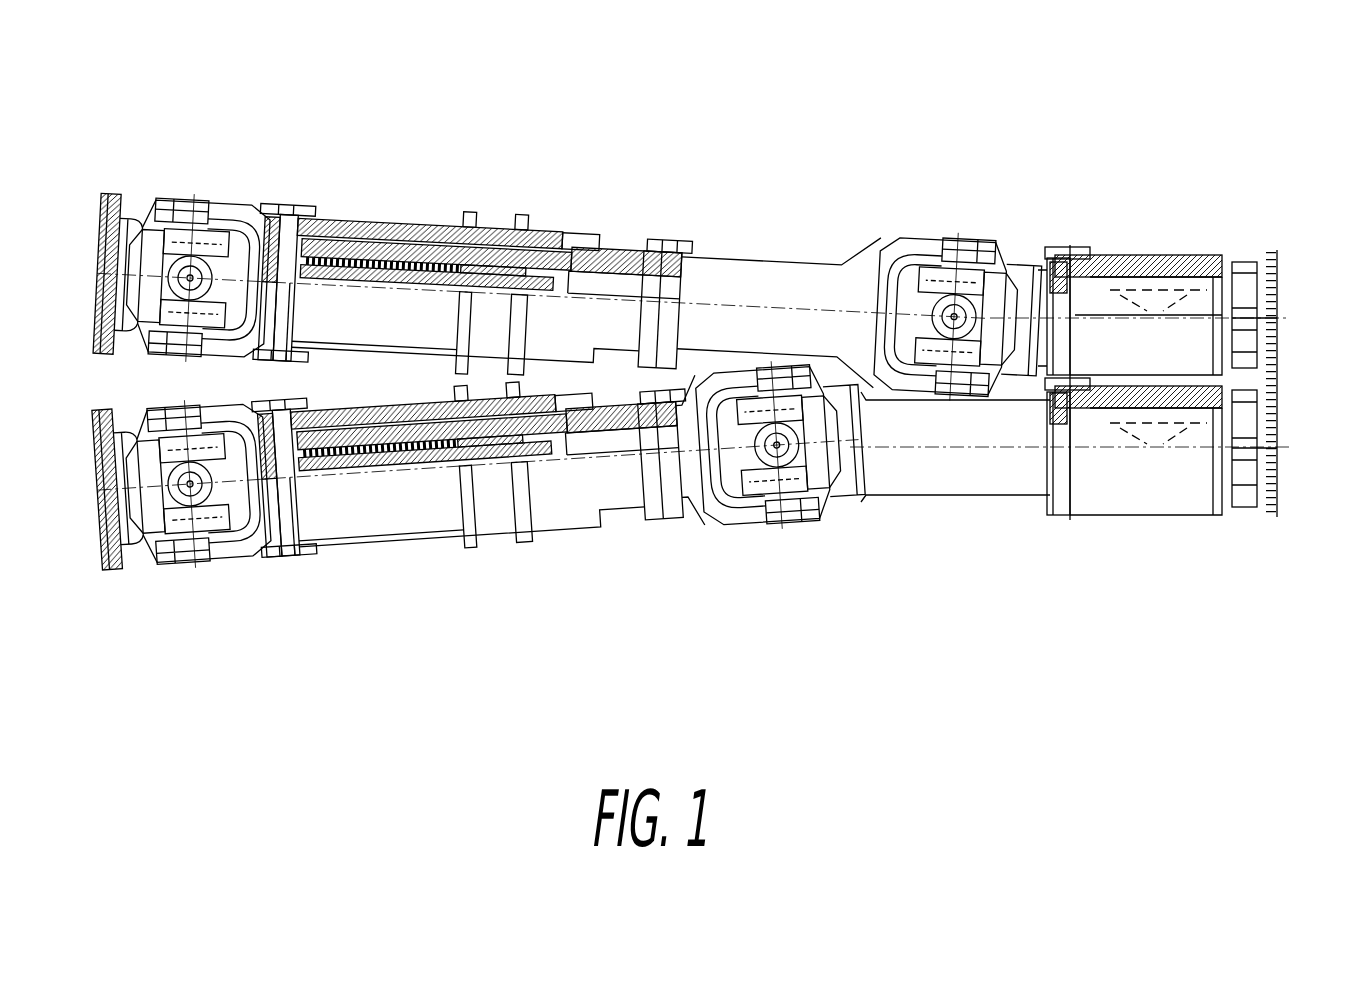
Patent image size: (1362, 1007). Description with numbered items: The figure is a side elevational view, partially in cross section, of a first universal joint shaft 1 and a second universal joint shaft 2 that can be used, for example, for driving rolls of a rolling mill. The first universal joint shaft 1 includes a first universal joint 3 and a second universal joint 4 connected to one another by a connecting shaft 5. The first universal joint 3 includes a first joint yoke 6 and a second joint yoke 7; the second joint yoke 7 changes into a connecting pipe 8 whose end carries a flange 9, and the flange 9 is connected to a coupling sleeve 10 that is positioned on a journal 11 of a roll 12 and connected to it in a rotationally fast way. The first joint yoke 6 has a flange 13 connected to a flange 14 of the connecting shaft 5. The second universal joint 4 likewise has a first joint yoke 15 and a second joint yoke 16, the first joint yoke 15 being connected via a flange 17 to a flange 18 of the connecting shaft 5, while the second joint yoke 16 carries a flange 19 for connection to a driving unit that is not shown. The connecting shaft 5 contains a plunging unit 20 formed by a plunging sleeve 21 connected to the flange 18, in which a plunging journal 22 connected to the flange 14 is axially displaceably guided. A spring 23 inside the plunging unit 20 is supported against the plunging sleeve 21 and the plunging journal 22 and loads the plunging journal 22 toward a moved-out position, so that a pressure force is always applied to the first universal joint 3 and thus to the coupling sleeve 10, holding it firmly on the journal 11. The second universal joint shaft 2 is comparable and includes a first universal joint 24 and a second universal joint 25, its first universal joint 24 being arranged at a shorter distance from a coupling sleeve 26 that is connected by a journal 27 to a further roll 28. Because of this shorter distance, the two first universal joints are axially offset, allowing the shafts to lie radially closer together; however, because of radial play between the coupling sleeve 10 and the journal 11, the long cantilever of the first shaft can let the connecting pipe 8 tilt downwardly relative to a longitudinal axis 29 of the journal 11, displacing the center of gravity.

The first universal joint shaft 1 is at (497, 603).
The second universal joint shaft 2 is at (521, 150).
The first universal joint 3 is at (780, 530).
The second universal joint 4 is at (193, 600).
The connecting shaft 5 is at (494, 345).
The first joint yoke 6 is at (780, 572).
The second joint yoke 7 is at (835, 497).
The connecting pipe 8 is at (977, 482).
The flange 9 is at (1050, 507).
The coupling sleeve 10 is at (1165, 500).
The journal 11 is at (1182, 440).
The roll 12 is at (1275, 458).
The flange 13 is at (680, 540).
The flange 14 is at (650, 527).
The first joint yoke 15 is at (220, 558).
The second joint yoke 16 is at (150, 548).
The flange 17 is at (276, 556).
The flange 18 is at (297, 560).
The flange 19 is at (105, 565).
The plunging unit 20 is at (467, 474).
The plunging sleeve 21 is at (332, 415).
The plunging journal 22 is at (418, 415).
The spring 23 is at (372, 420).
The first universal joint 24 is at (950, 210).
The second universal joint 25 is at (180, 178).
The coupling sleeve 26 is at (1160, 265).
The journal 27 is at (1185, 305).
The further roll 28 is at (1275, 348).
The longitudinal axis 29 is at (955, 447).